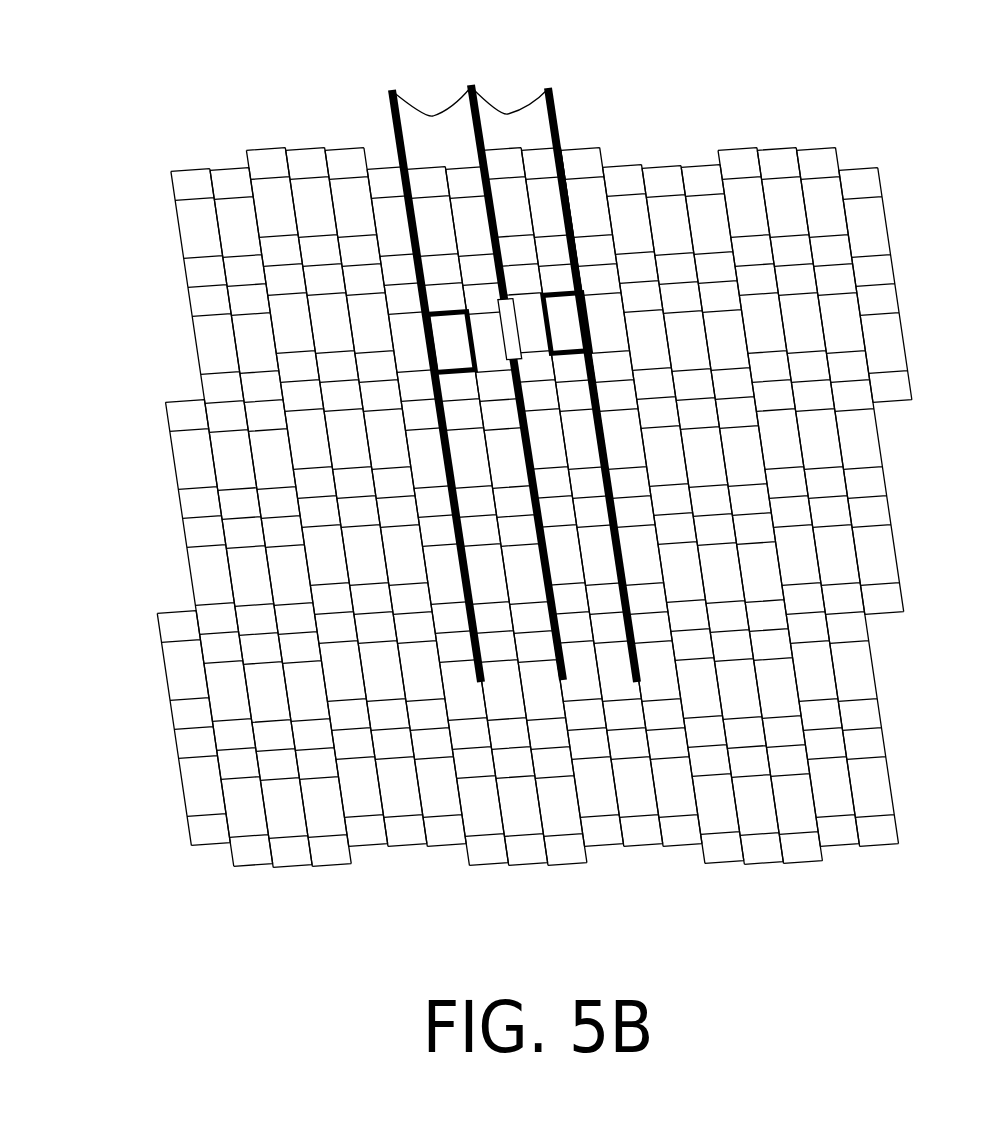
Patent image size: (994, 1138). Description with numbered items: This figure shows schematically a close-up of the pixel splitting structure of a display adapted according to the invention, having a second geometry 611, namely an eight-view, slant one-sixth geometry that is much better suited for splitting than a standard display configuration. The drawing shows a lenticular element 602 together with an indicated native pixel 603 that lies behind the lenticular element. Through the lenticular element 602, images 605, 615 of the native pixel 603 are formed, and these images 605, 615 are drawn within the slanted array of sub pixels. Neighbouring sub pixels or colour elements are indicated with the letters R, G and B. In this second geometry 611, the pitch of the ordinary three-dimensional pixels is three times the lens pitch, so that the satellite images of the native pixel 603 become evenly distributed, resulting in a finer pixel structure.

The second geometry 611 is at (118, 229).
The lenticular element 602 is at (408, 106).
The image of native pixel 605 is at (453, 308).
The native pixel 603 is at (510, 333).
The image of native pixel 615 is at (575, 297).